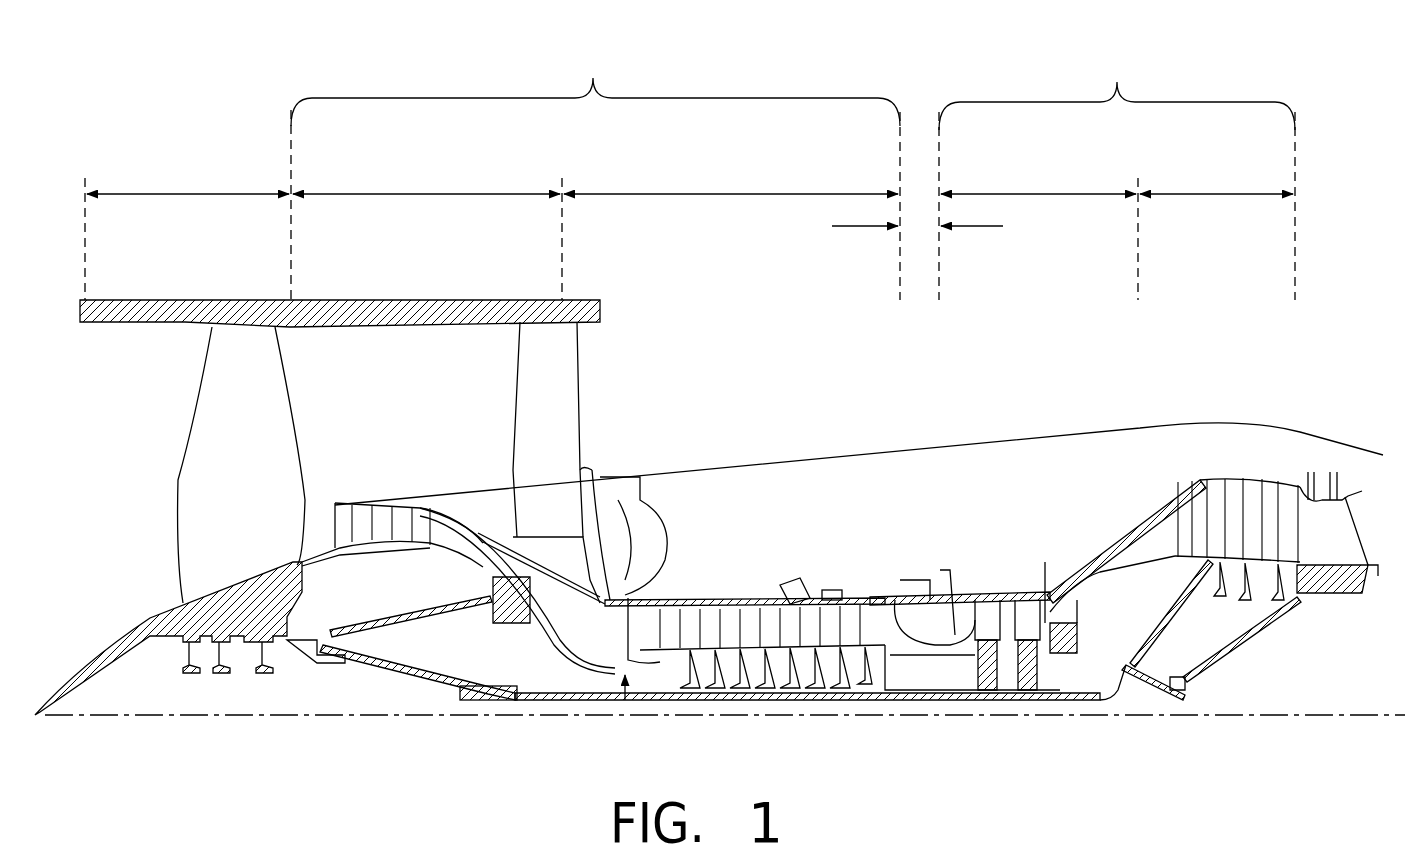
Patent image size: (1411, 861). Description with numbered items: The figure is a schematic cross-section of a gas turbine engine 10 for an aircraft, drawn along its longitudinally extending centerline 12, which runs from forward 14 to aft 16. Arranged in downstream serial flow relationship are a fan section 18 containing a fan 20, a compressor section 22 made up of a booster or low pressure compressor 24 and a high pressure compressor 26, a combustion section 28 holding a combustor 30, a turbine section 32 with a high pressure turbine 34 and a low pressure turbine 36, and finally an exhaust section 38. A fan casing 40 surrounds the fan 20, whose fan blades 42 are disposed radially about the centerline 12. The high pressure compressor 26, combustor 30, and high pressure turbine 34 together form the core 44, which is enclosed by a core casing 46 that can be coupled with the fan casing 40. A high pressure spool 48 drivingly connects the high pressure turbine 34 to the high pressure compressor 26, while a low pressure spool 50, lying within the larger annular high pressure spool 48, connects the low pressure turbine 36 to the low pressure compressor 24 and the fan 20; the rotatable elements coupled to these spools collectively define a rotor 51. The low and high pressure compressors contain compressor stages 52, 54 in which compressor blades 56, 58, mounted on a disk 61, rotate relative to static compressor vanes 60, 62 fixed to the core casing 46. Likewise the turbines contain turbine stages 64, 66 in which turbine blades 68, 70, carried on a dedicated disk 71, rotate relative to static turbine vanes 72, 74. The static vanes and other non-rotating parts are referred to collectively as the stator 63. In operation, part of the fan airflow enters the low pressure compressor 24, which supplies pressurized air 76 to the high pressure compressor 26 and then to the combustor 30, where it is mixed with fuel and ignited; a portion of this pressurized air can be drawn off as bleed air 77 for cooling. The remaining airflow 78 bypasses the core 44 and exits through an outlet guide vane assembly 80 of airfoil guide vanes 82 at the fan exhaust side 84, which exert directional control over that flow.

The gas turbine engine 10 is at (1312, 224).
The centerline 12 is at (165, 716).
The forward 14 is at (101, 422).
The aft 16 is at (1381, 520).
The fan section 18 is at (200, 194).
The fan 20 is at (155, 562).
The compressor section 22 is at (593, 90).
The low pressure compressor 24 is at (448, 194).
The high pressure compressor 26 is at (730, 194).
The combustion section 28 is at (845, 226).
The combustor 30 is at (940, 600).
The turbine section 32 is at (1117, 94).
The high pressure turbine 34 is at (1040, 194).
The low pressure turbine 36 is at (1215, 194).
The exhaust section 38 is at (1398, 468).
The fan casing 40 is at (330, 300).
The fan blades 42 is at (258, 375).
The core 44 is at (862, 484).
The core casing 46 is at (1125, 525).
The HP spool 48 is at (905, 650).
The LP spool 50 is at (495, 700).
The rotor 51 is at (762, 700).
The compressor stages 52 is at (392, 480).
The compressor stages 54 is at (735, 578).
The compressor blades 56 is at (380, 510).
The compressor blades 58 is at (660, 600).
The static compressor vanes 60 is at (332, 498).
The disk 61 is at (395, 548).
The static compressor vanes 62 is at (650, 575).
The stator 63 is at (1195, 480).
The turbine stages 64 is at (996, 589).
The turbine stages 66 is at (1268, 480).
The turbine blades 68 is at (1050, 540).
The turbine blades 70 is at (1295, 460).
The disk 71 is at (1020, 650).
The static turbine vanes 72 is at (985, 600).
The static turbine vanes 74 is at (1260, 490).
The pressurized air 76 is at (530, 620).
The bleed air 77 is at (500, 560).
The airflow 78 is at (620, 380).
The outlet guide vane assembly 80 is at (600, 437).
The airfoil guide vanes 82 is at (525, 418).
The fan exhaust side 84 is at (600, 355).